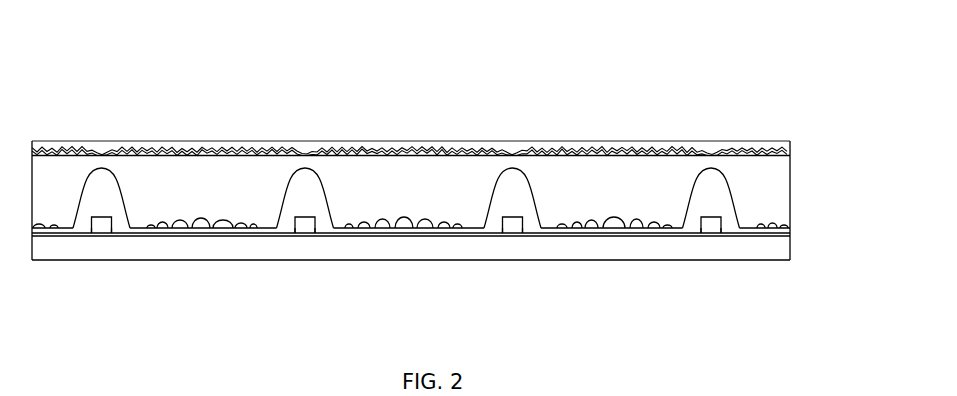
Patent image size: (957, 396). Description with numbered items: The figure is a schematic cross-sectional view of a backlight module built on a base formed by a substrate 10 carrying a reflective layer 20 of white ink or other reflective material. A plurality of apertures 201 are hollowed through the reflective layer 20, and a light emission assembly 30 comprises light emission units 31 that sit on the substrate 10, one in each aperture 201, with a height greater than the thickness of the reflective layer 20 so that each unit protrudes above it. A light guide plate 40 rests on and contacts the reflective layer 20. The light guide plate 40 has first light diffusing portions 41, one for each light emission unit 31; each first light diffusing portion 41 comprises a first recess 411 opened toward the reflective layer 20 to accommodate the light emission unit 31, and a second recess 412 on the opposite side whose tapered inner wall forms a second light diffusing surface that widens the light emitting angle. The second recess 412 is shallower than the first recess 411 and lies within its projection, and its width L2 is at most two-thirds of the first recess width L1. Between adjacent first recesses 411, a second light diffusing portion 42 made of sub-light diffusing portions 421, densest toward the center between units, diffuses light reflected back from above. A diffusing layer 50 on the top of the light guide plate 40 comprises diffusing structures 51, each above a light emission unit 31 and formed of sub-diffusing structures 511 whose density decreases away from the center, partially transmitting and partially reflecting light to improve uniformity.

The substrate 10 is at (780, 252).
The reflective layer 20 is at (795, 228).
The aperture 201 is at (306, 238).
The light emission assembly 30 is at (445, 254).
The light emission unit 31 is at (708, 231).
The light guide plate 40 is at (788, 212).
The first light diffusing portion 41 is at (464, 190).
The first recess 411 is at (722, 200).
The second recess 412 is at (735, 153).
The second light diffusing portion 42 is at (422, 266).
The sub-light diffusing portion 421 is at (620, 222).
The diffusing layer 50 is at (793, 143).
The diffusing structure 51 is at (584, 144).
The sub-diffusing structure 511 is at (480, 148).
The width of aperture of cross section of first recess L1 is at (73, 168).
The width of aperture of cross section of second recess L2 is at (112, 160).